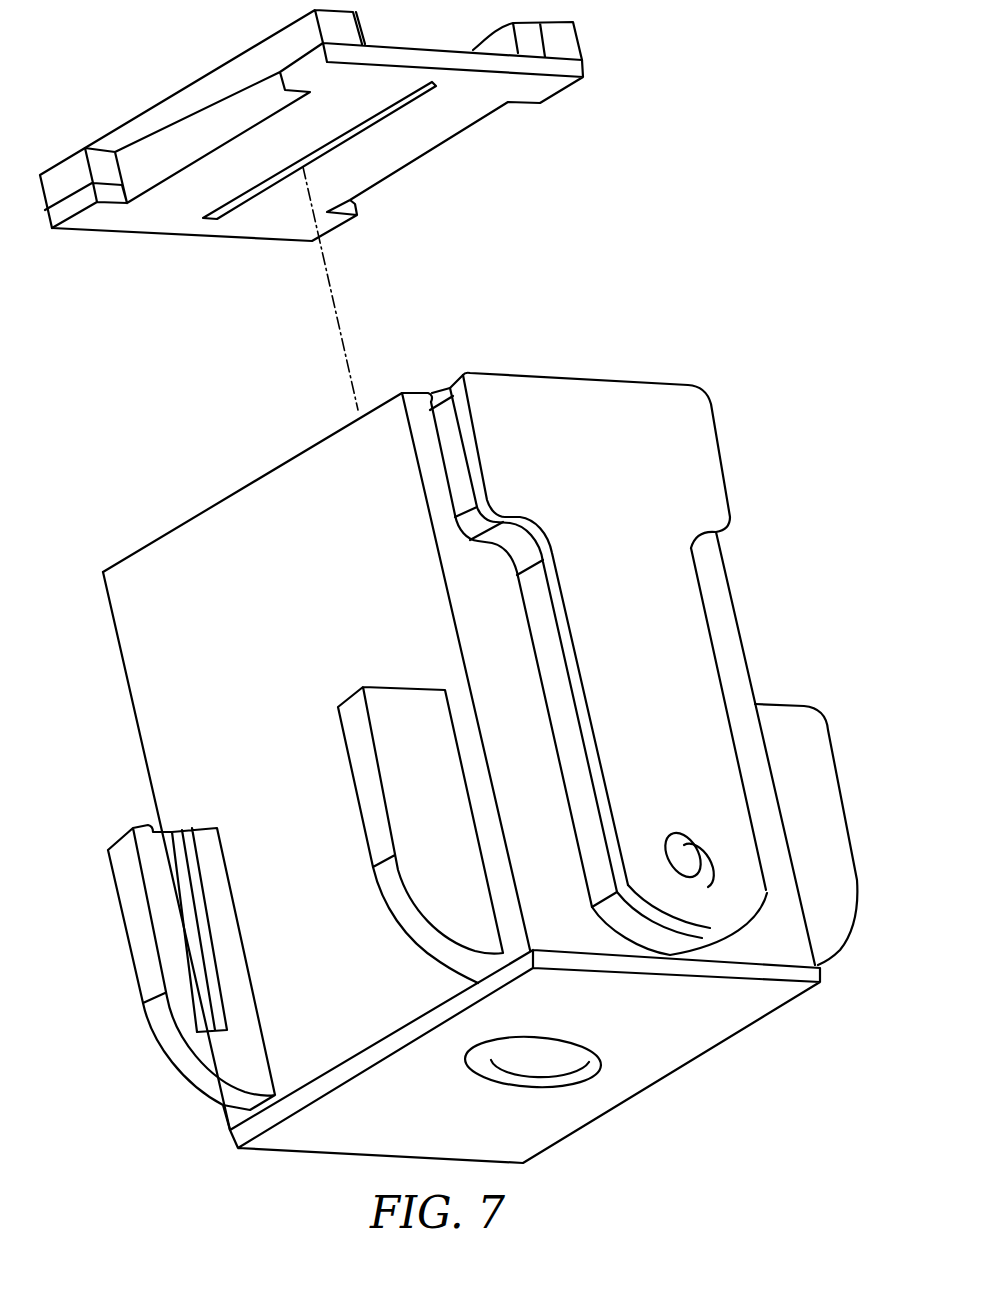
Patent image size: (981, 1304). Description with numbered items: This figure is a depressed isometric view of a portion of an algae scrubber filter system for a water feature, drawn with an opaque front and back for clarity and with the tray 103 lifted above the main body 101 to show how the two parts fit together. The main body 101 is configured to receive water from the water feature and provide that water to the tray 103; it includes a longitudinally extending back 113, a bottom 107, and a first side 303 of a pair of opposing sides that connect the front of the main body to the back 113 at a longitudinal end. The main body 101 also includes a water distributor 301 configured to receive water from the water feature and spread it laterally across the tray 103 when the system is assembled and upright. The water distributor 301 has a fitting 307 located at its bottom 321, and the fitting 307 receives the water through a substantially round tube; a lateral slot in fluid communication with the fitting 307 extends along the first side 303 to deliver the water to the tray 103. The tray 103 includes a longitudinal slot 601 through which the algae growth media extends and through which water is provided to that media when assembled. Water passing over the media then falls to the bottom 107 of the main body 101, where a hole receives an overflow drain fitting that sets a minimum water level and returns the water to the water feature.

The main body 101 is at (735, 441).
The tray 103 is at (555, 40).
The bottom 107 is at (680, 1033).
The back 113 is at (145, 580).
The water distributor 301 is at (670, 611).
The first side 303 is at (787, 933).
The fitting 307 is at (699, 848).
The bottom 321 is at (710, 925).
The longitudinal slot 601 is at (217, 217).